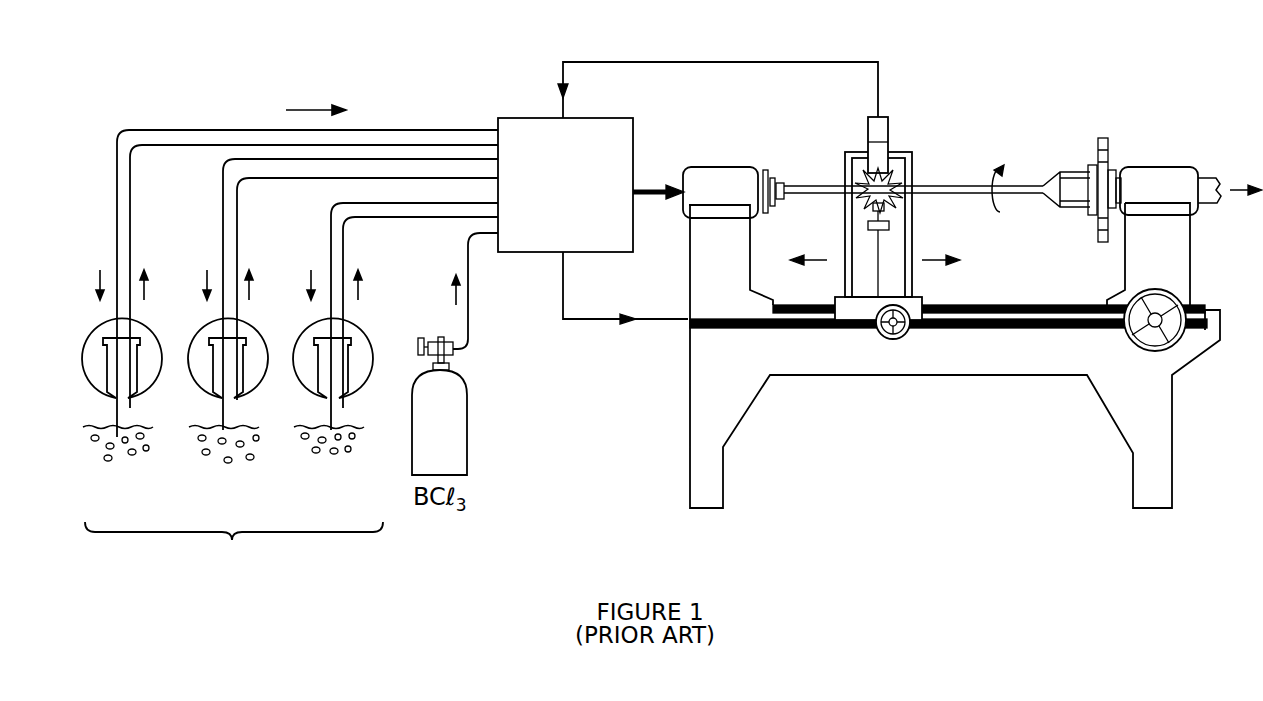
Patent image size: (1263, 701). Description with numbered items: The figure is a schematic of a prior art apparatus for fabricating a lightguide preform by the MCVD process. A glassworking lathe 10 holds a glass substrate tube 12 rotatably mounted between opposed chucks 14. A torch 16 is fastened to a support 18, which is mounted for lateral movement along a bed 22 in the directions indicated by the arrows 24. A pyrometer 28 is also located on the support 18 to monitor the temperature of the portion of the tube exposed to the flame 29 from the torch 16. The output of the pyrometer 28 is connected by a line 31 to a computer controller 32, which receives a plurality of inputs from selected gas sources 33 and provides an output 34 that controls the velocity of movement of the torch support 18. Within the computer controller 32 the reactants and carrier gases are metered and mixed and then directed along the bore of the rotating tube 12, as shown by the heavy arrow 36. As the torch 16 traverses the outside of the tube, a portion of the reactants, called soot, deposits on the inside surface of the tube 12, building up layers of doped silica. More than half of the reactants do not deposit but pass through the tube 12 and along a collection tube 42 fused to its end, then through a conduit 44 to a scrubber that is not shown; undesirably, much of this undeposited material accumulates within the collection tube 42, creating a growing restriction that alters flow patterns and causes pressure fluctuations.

The glassworking lathe 10 is at (946, 472).
The glass substrate tube 12 is at (800, 185).
The chucks 14 is at (768, 172).
The torch 16 is at (868, 226).
The support 18 is at (922, 297).
The bed 22 is at (1036, 305).
The arrows 24 is at (816, 262).
The pyrometer 28 is at (883, 150).
The flame 29 is at (860, 172).
The line 31 is at (776, 62).
The computer controller 32 is at (633, 118).
The gas sources 33 is at (238, 604).
The output 34 is at (597, 321).
The heavy arrow 36 is at (648, 185).
The collection tube 42 is at (1050, 208).
The conduit 44 is at (1210, 178).